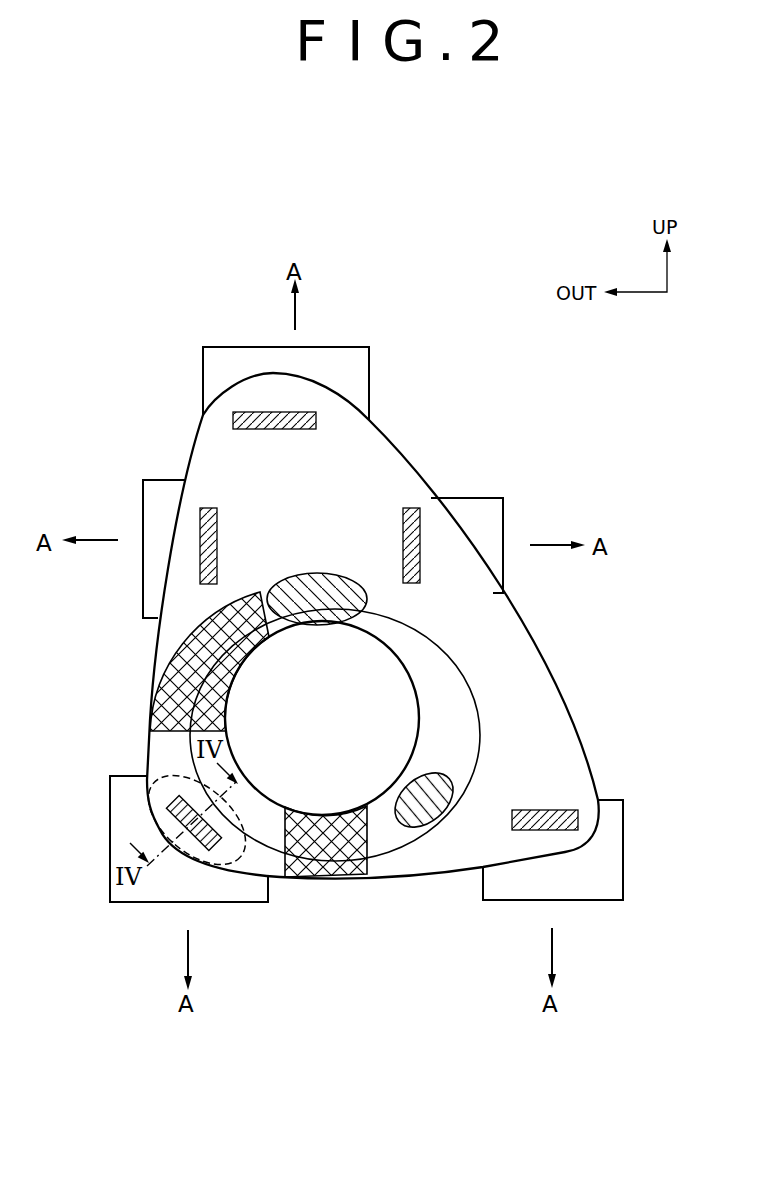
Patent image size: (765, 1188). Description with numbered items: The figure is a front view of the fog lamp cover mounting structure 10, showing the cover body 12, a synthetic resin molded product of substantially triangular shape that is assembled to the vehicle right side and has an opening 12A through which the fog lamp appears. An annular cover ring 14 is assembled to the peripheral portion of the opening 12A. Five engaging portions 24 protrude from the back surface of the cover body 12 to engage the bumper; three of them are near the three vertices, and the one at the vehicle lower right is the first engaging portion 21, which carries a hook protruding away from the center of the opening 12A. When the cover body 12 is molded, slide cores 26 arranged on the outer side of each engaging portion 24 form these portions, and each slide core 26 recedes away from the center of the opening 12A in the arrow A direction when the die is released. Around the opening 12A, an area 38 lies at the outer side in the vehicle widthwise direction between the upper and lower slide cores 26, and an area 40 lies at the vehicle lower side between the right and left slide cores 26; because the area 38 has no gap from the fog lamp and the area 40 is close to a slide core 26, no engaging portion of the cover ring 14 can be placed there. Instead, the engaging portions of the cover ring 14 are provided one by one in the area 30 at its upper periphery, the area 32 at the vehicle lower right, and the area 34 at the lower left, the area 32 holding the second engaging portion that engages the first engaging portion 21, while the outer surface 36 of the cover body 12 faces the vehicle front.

The rotor structure 10 is at (498, 424).
The cover body 12 is at (546, 670).
The opening 12A is at (348, 709).
The cover ring 14 is at (426, 640).
The first engaging portion 21 is at (168, 821).
The engaging portions 24 is at (219, 538).
The slide cores 26 is at (369, 363).
The area 30 is at (316, 575).
The area 32 is at (150, 790).
The area 34 is at (447, 773).
The outer surface 36 is at (398, 420).
The area 38 is at (178, 650).
The area 40 is at (370, 843).